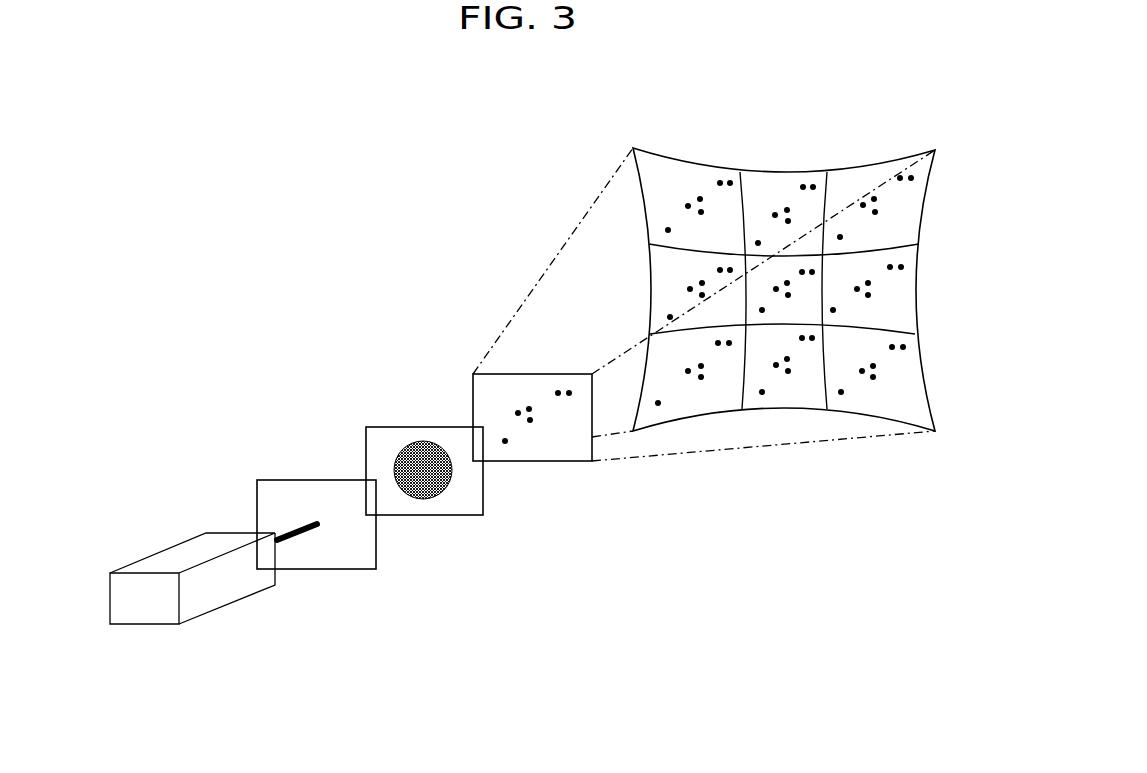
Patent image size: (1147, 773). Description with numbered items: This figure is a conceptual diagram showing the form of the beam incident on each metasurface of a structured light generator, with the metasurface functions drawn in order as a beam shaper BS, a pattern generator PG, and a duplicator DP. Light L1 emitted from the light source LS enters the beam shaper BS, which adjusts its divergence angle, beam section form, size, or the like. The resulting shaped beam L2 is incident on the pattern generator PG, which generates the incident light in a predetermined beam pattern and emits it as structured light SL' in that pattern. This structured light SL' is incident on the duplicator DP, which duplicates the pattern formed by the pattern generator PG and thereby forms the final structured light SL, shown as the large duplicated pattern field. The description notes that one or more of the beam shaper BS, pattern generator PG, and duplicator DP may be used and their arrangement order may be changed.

The light source LS is at (216, 600).
The light L1 is at (301, 522).
The beam shaper BS is at (335, 570).
The beam L2 is at (418, 447).
The pattern generator PG is at (444, 516).
The duplicator DP is at (573, 462).
The structured light SL' is at (537, 461).
The final structured light SL is at (784, 256).